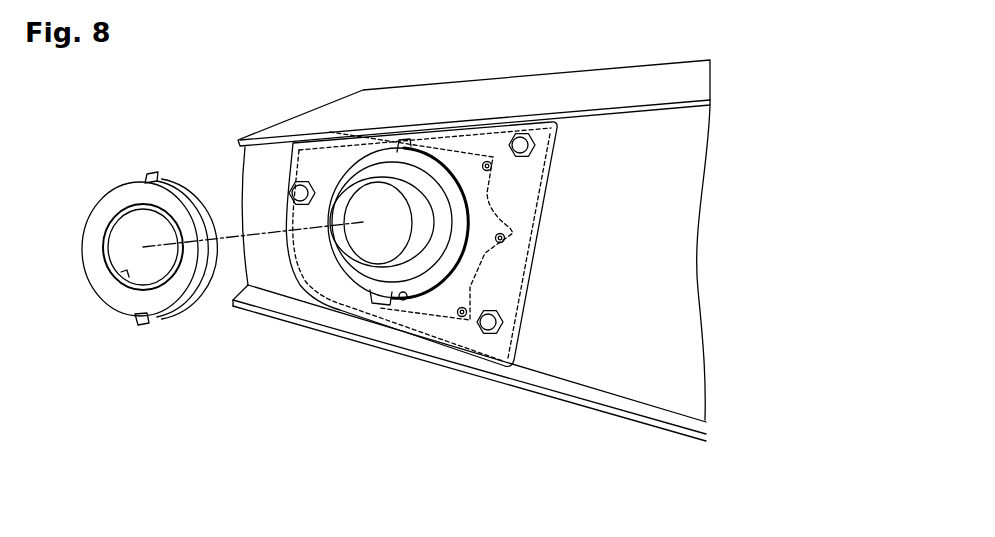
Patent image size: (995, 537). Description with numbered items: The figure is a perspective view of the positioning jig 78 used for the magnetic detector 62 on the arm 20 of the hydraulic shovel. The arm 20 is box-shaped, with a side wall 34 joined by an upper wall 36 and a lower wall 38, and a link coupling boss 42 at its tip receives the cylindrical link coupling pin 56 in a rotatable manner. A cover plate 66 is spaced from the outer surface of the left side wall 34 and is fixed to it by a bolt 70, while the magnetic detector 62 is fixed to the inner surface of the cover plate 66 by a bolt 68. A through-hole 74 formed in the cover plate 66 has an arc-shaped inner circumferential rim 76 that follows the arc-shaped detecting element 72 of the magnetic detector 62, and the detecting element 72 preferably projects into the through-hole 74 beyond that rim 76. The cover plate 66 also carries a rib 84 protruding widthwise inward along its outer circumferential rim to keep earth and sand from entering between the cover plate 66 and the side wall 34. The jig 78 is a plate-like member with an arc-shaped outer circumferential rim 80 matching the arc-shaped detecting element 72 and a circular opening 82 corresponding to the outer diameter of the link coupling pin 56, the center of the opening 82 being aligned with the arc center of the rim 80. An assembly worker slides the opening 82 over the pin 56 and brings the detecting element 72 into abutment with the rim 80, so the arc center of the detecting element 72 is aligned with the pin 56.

The arm 20 is at (471, 243).
The side wall 34 is at (637, 132).
The upper wall 36 is at (601, 88).
The lower wall 38 is at (612, 412).
The link coupling boss 42 is at (380, 170).
The link coupling pin 56 is at (363, 220).
The magnetic detector 62 is at (437, 308).
The cover plate 66 is at (313, 264).
The bolt 68 is at (464, 310).
The bolt 70 is at (292, 191).
The arc-shaped detecting element 72 is at (393, 303).
The through-hole 74 is at (338, 268).
The arc-shaped inner circumferential rim 76 is at (373, 300).
The jig 78 is at (131, 235).
The arc-shaped outer circumferential rim 80 is at (200, 284).
The circular opening 82 is at (118, 276).
The rib 84 is at (526, 334).